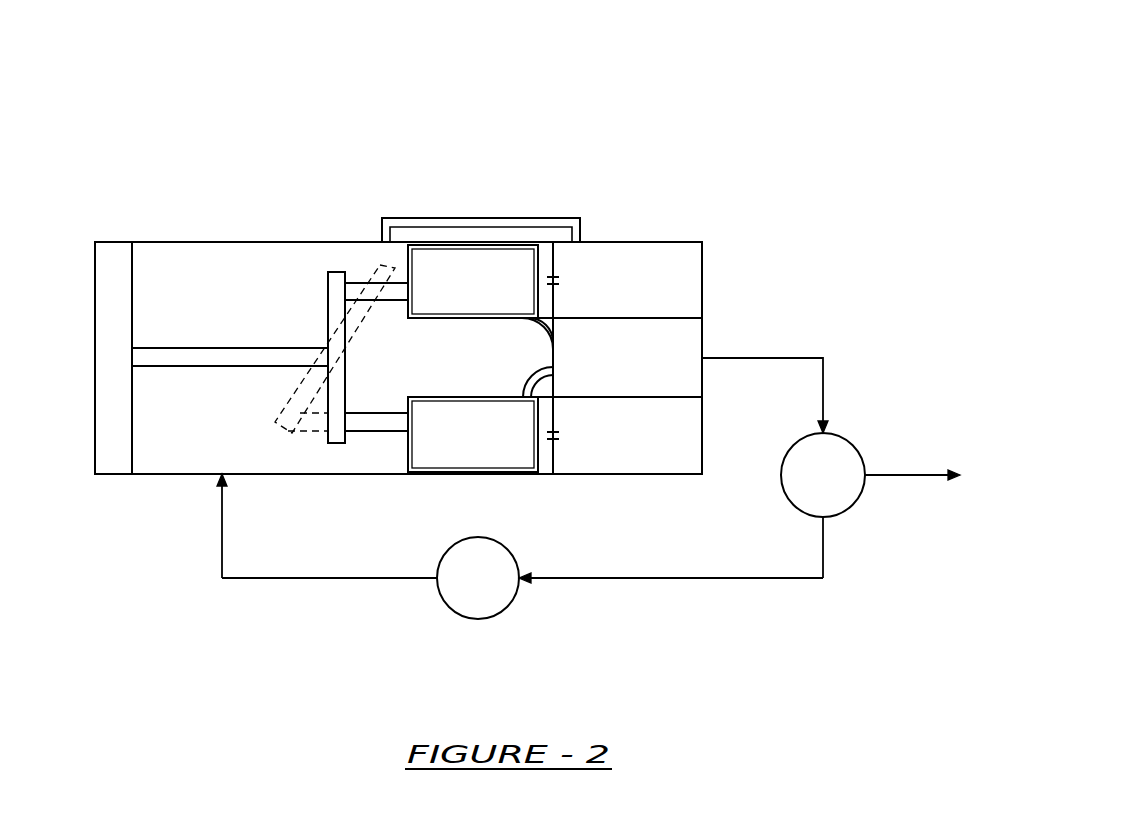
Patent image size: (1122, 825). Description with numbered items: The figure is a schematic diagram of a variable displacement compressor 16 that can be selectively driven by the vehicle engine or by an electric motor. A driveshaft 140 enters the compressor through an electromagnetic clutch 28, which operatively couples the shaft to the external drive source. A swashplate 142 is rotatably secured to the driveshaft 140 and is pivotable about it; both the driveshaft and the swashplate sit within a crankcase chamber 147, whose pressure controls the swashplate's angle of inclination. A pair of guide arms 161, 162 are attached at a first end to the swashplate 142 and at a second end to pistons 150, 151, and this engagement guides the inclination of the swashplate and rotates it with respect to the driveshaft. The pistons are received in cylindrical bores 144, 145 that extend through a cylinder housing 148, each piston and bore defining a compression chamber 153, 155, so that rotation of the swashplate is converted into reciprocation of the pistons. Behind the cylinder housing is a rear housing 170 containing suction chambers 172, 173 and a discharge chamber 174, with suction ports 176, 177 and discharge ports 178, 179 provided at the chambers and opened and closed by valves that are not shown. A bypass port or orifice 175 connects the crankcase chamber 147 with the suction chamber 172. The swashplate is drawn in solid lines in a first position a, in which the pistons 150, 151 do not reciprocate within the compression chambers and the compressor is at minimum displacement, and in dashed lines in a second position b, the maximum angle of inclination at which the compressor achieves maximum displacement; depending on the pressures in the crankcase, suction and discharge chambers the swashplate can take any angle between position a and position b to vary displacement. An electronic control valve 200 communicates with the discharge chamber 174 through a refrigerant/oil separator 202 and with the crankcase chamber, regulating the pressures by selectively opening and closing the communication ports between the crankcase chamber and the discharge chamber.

The variable displacement compressor 16 is at (702, 98).
The electromagnetic clutch 28 is at (118, 265).
The driveshaft 140 is at (204, 358).
The swashplate 142 is at (333, 307).
The cylindrical bore 144 is at (502, 240).
The cylindrical bore 145 is at (438, 472).
The crankcase chamber 147 is at (245, 320).
The cylinder housing 148 is at (477, 242).
The piston 150 is at (438, 257).
The piston 151 is at (480, 450).
The compression chamber 153 is at (546, 252).
The compression chamber 155 is at (543, 470).
The guide arm 161 is at (398, 295).
The guide arm 162 is at (383, 426).
The rear housing 170 is at (690, 237).
The suction chamber 172 is at (674, 312).
The suction chamber 173 is at (674, 457).
The discharge chamber 174 is at (674, 378).
The bypass port or orifice 175 is at (577, 218).
The suction port 176 is at (556, 280).
The suction port 177 is at (556, 440).
The discharge port 178 is at (527, 333).
The discharge port 179 is at (528, 383).
The electronic control valve 200 is at (503, 592).
The refrigerant/oil separator 202 is at (848, 498).
The position a is at (345, 397).
The position b is at (290, 398).